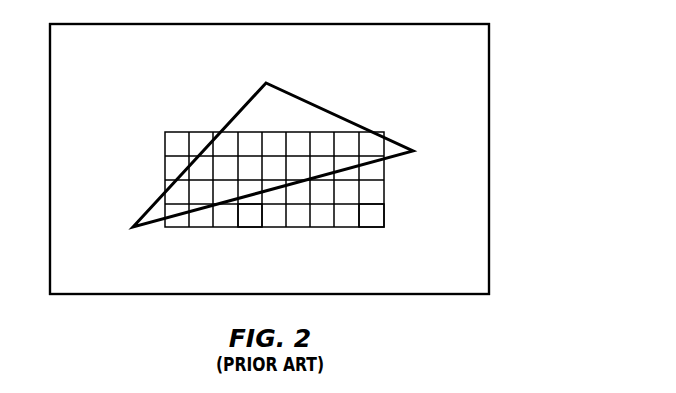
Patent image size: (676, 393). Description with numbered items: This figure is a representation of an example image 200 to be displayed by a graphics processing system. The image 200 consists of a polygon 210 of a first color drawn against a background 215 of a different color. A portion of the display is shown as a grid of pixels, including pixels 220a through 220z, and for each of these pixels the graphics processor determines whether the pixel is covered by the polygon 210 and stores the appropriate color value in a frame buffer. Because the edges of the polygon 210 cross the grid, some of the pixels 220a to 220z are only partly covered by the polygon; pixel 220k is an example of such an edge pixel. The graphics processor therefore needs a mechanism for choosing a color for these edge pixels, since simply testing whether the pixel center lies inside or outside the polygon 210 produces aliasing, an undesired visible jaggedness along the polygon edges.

The image 200 is at (556, 52).
The background 215 is at (107, 64).
The polygon 210 is at (325, 108).
The pixel 220a is at (177, 140).
The pixel 220k is at (252, 200).
The pixel 220z is at (372, 219).